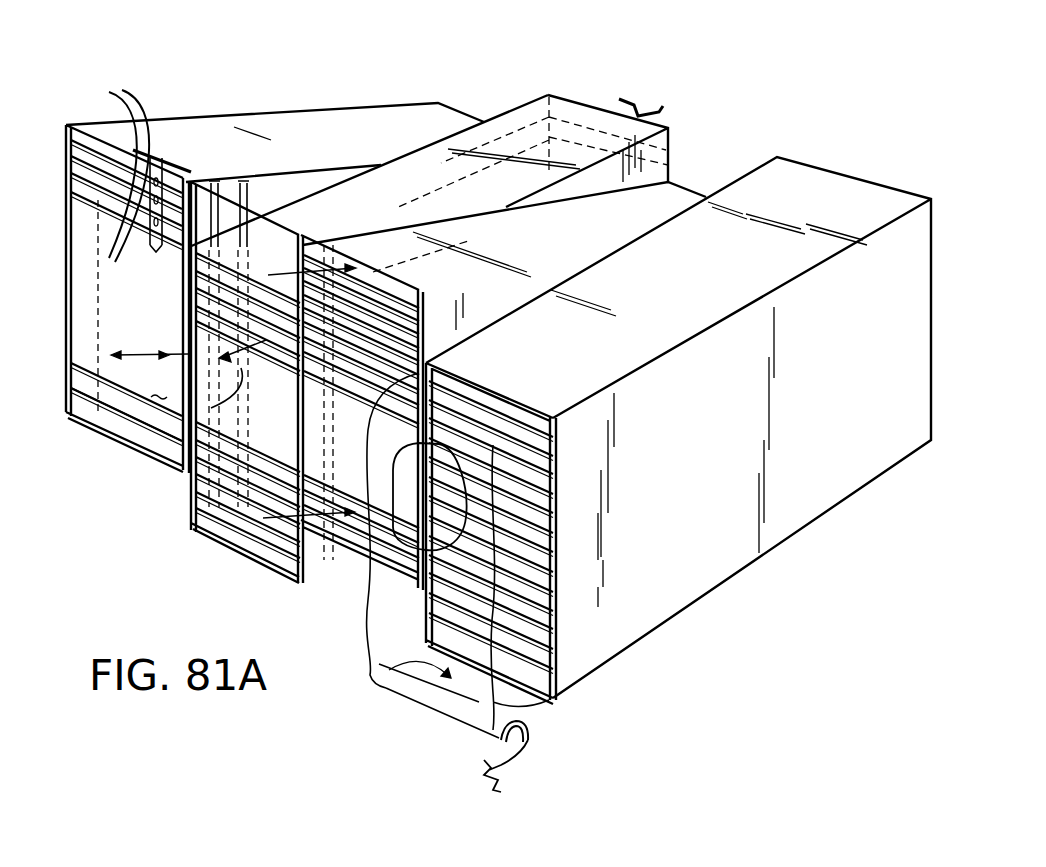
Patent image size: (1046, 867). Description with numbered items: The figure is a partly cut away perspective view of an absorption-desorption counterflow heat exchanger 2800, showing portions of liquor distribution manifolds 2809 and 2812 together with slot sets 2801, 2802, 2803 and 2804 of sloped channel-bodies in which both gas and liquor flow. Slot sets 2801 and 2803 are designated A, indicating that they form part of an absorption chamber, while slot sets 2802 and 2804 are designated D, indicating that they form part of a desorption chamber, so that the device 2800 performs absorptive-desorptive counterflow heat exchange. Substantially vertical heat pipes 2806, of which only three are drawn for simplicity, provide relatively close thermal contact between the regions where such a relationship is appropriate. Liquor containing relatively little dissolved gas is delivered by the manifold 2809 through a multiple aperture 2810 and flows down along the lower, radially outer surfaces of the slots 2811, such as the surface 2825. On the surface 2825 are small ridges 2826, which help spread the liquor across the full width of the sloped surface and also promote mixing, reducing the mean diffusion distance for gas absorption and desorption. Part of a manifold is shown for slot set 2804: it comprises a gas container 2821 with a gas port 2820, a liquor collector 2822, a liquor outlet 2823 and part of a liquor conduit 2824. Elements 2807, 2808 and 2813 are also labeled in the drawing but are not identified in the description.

The absorption-desorption counterflow heat exchanger 2800 is at (435, 748).
The slot set 2801 is at (187, 62).
The slot set 2802 is at (548, 97).
The slot set 2803 is at (353, 232).
The slot set 2804 is at (776, 157).
The heat pipes 2806 is at (241, 181).
The air flow arrow 2807 is at (286, 276).
The curtain 2808 is at (488, 648).
The liquor distribution manifold 2809 is at (177, 165).
The multiple aperture 2810 is at (157, 252).
The slots 2811 is at (70, 442).
The liquor distribution manifold 2812 is at (670, 78).
The filter frame 2813 is at (168, 400).
The gas port 2820 is at (460, 458).
The gas container 2821 is at (363, 640).
The liquor collector 2822 is at (455, 715).
The liquor outlet 2823 is at (530, 724).
The liquor conduit 2824 is at (522, 762).
The surface 2825 is at (118, 380).
The small ridges 2826 is at (165, 326).